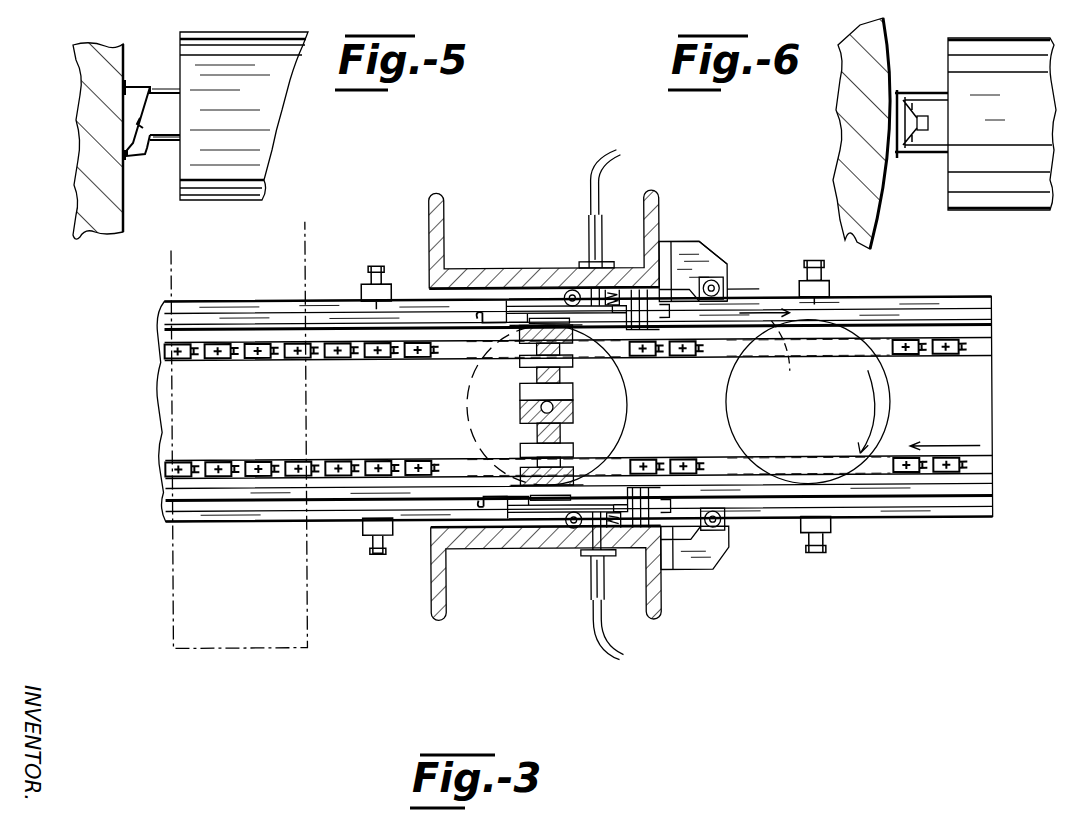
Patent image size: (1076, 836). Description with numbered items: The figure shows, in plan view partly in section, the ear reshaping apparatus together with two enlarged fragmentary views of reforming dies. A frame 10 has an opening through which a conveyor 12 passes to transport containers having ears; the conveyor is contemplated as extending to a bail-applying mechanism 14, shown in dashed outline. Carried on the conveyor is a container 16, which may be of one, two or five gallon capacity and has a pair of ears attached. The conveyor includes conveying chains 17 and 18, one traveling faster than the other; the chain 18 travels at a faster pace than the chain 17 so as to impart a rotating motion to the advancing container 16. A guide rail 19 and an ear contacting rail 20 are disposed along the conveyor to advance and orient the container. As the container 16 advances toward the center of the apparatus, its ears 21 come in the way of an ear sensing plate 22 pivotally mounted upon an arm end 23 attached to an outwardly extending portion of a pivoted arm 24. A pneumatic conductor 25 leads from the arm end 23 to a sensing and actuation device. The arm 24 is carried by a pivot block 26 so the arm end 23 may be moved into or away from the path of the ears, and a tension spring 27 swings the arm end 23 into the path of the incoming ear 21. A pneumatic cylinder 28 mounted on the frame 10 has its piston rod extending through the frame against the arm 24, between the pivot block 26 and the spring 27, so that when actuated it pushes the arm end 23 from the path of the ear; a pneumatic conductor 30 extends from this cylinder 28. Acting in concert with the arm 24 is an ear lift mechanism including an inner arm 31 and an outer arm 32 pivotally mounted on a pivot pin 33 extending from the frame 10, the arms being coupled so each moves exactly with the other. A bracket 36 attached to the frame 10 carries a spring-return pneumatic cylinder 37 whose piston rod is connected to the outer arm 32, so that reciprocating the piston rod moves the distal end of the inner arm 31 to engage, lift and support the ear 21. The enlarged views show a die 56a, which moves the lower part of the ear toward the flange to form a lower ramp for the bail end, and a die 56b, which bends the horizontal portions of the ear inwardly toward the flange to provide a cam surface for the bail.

In FIG. 3, the frame 10 is at (665, 200).
In FIG. 3, the conveyor 12 is at (597, 427).
In FIG. 3, the bail-applying mechanism 14 is at (300, 646).
In FIG. 3, the container 16 is at (672, 402).
In FIG. 3, the conveying chain 17 is at (940, 358).
In FIG. 3, the conveying chain 18 is at (975, 460).
In FIG. 3, the guide rail 19 is at (990, 300).
In FIG. 3, the ear contacting rail 20 is at (990, 506).
In FIG. 3, the ear 21 is at (785, 372).
In FIG. 3, the ear sensing plate 22 is at (520, 330).
In FIG. 3, the arm end 23 is at (512, 470).
In FIG. 3, the pivoted arm 24 is at (520, 312).
In FIG. 3, the pneumatic conductor 25 is at (487, 312).
In FIG. 3, the pivot block 26 is at (565, 300).
In FIG. 3, the spring 27 is at (618, 290).
In FIG. 3, the pneumatic cylinder 28 is at (602, 245).
In FIG. 3, the pneumatic conductor 30 is at (615, 160).
In FIG. 3, the inner arm 31 is at (620, 333).
In FIG. 3, the outer arm 32 is at (716, 260).
In FIG. 3, the pivot pin 33 is at (721, 244).
In FIG. 3, the bracket 36 is at (688, 242).
In FIG. 3, the pneumatic cylinder 37 is at (732, 290).
In FIG. 5, the die 56a is at (165, 92).
In FIG. 6, the die 56b is at (930, 98).